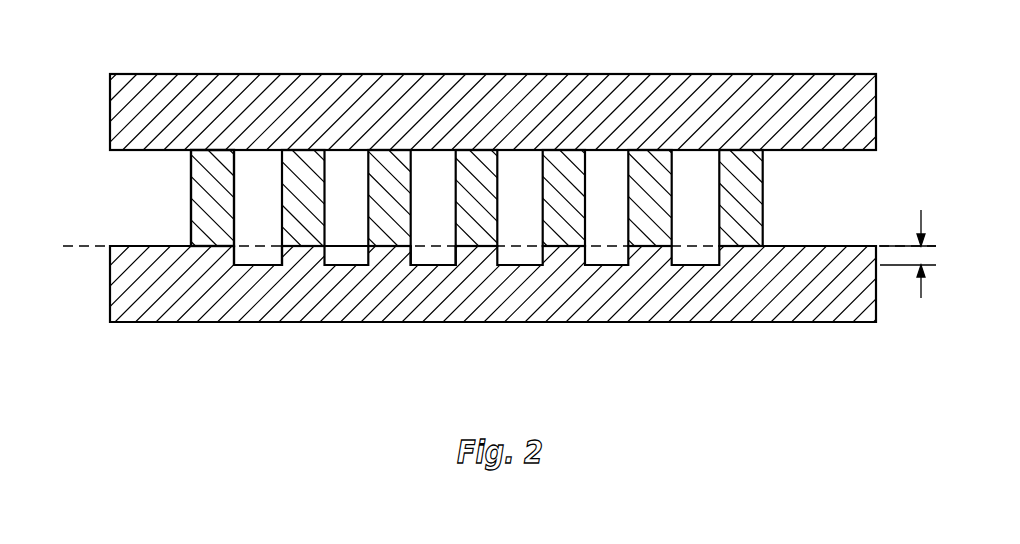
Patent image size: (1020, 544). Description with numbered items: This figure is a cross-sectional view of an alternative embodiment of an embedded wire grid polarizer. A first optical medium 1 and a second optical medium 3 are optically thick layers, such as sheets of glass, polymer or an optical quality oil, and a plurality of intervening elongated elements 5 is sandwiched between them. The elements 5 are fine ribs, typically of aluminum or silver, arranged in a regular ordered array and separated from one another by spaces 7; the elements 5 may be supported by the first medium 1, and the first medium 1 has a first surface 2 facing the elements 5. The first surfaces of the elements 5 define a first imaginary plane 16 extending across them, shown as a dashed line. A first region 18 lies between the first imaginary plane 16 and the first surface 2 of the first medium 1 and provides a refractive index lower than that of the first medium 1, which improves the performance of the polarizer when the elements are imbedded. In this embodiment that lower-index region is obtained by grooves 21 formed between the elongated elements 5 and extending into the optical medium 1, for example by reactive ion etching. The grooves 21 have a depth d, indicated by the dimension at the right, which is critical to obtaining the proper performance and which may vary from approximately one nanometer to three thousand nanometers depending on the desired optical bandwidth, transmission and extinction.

The first optical medium 1 is at (775, 300).
The first surface 2 is at (327, 265).
The second optical medium 3 is at (583, 97).
The elongated elements 5 is at (648, 165).
The spaces 7 is at (255, 220).
The first imaginary plane 16 is at (82, 246).
The first region 18 is at (353, 252).
The grooves 21 is at (432, 253).
The depth d is at (908, 239).